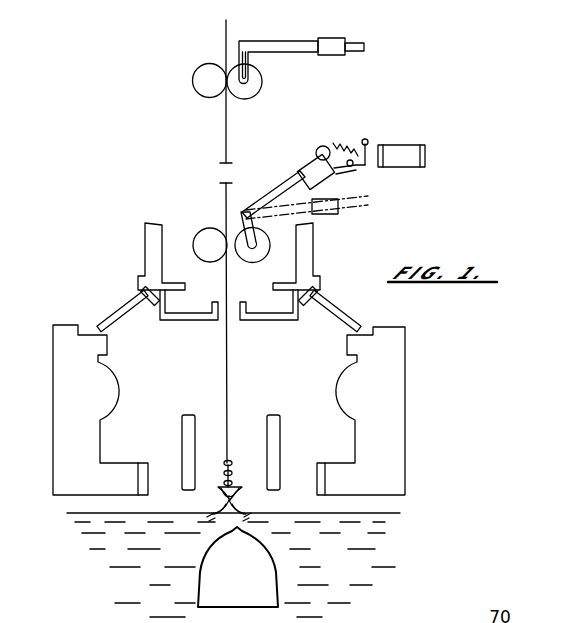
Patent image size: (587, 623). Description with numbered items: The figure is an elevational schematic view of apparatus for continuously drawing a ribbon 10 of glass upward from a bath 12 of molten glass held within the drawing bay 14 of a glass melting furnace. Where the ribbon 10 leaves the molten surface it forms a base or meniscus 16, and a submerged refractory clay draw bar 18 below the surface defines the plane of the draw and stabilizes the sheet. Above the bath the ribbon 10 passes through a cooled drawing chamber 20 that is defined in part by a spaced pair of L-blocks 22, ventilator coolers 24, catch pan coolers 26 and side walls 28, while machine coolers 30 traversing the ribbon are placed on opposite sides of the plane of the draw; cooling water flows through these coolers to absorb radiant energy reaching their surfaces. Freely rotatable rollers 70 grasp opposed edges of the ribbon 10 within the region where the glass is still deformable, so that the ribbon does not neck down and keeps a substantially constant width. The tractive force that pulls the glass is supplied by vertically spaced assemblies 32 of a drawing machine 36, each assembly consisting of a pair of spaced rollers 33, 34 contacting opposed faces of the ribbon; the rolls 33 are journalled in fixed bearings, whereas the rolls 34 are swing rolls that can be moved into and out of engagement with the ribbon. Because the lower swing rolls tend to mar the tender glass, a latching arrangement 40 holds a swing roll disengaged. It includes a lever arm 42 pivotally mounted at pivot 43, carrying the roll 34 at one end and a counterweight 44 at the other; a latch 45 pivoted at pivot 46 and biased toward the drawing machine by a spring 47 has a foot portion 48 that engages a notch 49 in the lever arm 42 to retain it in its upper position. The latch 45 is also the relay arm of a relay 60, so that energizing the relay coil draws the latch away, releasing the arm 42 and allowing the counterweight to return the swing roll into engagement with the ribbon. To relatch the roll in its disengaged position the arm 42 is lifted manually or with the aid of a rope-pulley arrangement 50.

The ribbon 10 is at (229, 382).
The bath 12 is at (390, 515).
The drawing bay 14 is at (318, 567).
The meniscus 16 is at (242, 512).
The draw bar 18 is at (260, 562).
The drawing chamber 20 is at (294, 404).
The L-blocks 22 is at (65, 393).
The ventilator coolers 24 is at (118, 309).
The catch pan coolers 26 is at (254, 322).
The side walls 28 is at (306, 251).
The machine coolers 30 is at (182, 443).
The assemblies 32 is at (271, 73).
The rollers 33 is at (197, 75).
The rollers 34 is at (258, 85).
The drawing machine 36 is at (160, 136).
The latching arrangement 40 is at (368, 129).
The lever arm 42 is at (279, 196).
The pivot 43 is at (243, 209).
The counterweight 44 is at (306, 170).
The latch 45 is at (370, 167).
The pivot 46 is at (369, 143).
The spring 47 is at (345, 142).
The foot portion 48 is at (327, 142).
The notch 49 is at (323, 147).
The rope-pulley arrangement 50 is at (360, 205).
The relay 60 is at (429, 151).
The rollers 70 is at (232, 466).